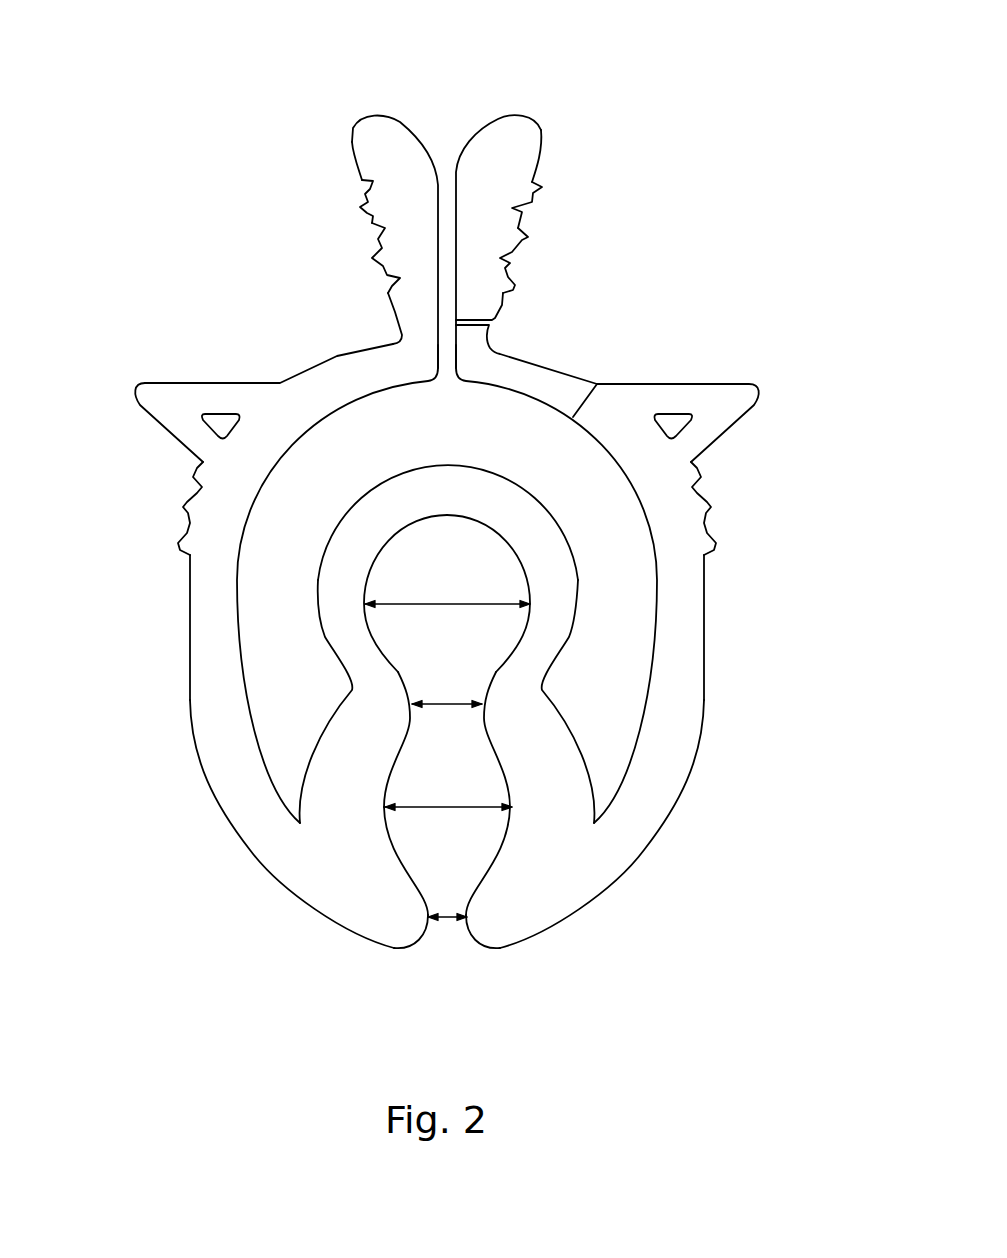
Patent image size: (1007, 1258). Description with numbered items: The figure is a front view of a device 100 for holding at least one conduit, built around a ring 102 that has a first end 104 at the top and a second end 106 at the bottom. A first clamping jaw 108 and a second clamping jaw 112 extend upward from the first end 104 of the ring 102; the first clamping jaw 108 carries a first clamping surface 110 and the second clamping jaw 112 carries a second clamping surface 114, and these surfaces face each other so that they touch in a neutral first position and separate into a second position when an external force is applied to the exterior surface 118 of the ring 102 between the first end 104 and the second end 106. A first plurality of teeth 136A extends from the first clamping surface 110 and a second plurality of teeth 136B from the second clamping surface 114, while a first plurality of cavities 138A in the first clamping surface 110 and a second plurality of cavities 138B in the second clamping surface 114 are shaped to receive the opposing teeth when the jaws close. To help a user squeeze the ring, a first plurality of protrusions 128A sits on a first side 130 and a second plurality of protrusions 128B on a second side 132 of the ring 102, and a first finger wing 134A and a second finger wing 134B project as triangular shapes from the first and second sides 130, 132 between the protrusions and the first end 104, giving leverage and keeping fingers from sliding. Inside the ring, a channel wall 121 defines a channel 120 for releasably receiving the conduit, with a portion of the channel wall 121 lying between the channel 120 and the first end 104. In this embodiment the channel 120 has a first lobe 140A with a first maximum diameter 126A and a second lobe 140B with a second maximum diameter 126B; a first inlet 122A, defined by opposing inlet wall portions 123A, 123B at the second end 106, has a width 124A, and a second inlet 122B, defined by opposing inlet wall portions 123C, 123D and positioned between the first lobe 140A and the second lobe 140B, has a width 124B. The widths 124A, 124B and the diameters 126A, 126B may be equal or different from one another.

The device 100 is at (103, 93).
The ring 102 is at (237, 790).
The first end 104 is at (375, 372).
The second end 106 is at (518, 952).
The first clamping jaw 108 is at (373, 127).
The first clamping surface 110 is at (358, 180).
The second clamping jaw 112 is at (524, 127).
The second clamping surface 114 is at (548, 162).
The exterior surface 118 is at (187, 606).
The channel 120 is at (466, 770).
The channel wall 121 is at (432, 483).
The first inlet 122A is at (451, 950).
The second inlet 122B is at (458, 680).
The inlet wall portion 123A is at (393, 917).
The inlet wall portion 123B is at (487, 923).
The inlet wall portion 123C is at (395, 697).
The inlet wall portion 123D is at (502, 688).
The width of the first inlet 124A is at (457, 917).
The width of the second inlet 124B is at (443, 703).
The first maximum diameter 126A is at (393, 764).
The second maximum diameter 126B is at (420, 603).
The first plurality of protrusions 128A is at (183, 505).
The second plurality of protrusions 128B is at (708, 503).
The first side 130 is at (187, 708).
The second side 132 is at (708, 640).
The first finger wing 134A is at (170, 392).
The second finger wing 134B is at (703, 392).
The first plurality of teeth 136A is at (360, 213).
The second plurality of teeth 136B is at (515, 208).
The first plurality of cavities 138A is at (400, 278).
The second plurality of cavities 138B is at (500, 258).
The first lobe 140A is at (473, 843).
The second lobe 140B is at (458, 583).